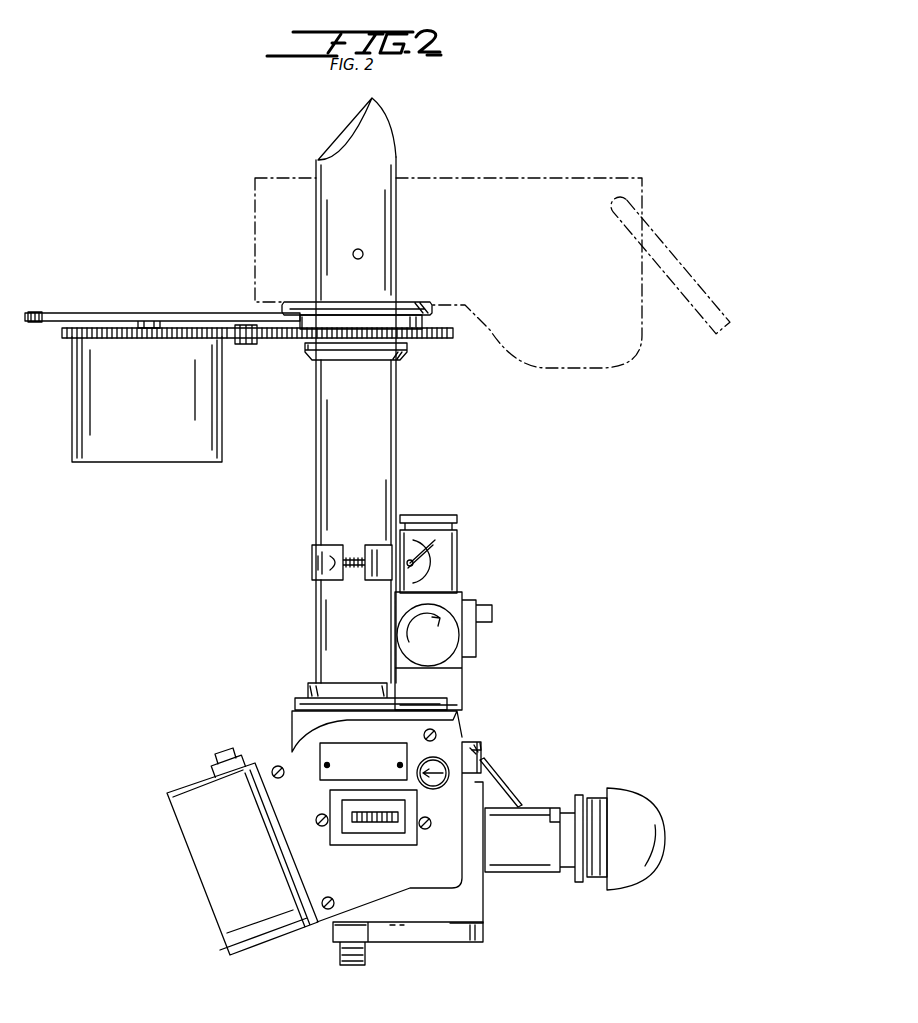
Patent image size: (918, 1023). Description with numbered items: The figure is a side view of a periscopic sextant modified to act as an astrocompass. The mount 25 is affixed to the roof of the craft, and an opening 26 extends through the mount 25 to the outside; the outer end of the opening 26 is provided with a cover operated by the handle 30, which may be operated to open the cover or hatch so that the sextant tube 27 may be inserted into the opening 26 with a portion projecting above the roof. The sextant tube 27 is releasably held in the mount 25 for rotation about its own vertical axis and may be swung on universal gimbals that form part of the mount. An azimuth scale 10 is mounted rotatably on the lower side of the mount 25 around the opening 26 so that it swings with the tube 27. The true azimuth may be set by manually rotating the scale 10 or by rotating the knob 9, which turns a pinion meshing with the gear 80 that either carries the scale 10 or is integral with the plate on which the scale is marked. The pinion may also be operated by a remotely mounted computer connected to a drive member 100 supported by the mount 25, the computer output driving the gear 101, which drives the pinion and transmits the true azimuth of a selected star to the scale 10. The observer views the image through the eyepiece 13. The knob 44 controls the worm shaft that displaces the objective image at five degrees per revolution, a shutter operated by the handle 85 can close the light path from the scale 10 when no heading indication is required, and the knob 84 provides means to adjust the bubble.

The mount 25 is at (555, 185).
The handle 30 is at (678, 268).
The sextant tube 27 is at (382, 477).
The azimuth scale 10 is at (448, 340).
The gear 101 is at (62, 333).
The knob 9 is at (247, 344).
The gear 80 is at (296, 340).
The opening 26 is at (405, 350).
The drive member 100 is at (216, 412).
The handle 85 is at (445, 551).
The knob 84 is at (452, 643).
The knob 44 is at (505, 760).
The eyepiece 13 is at (620, 800).